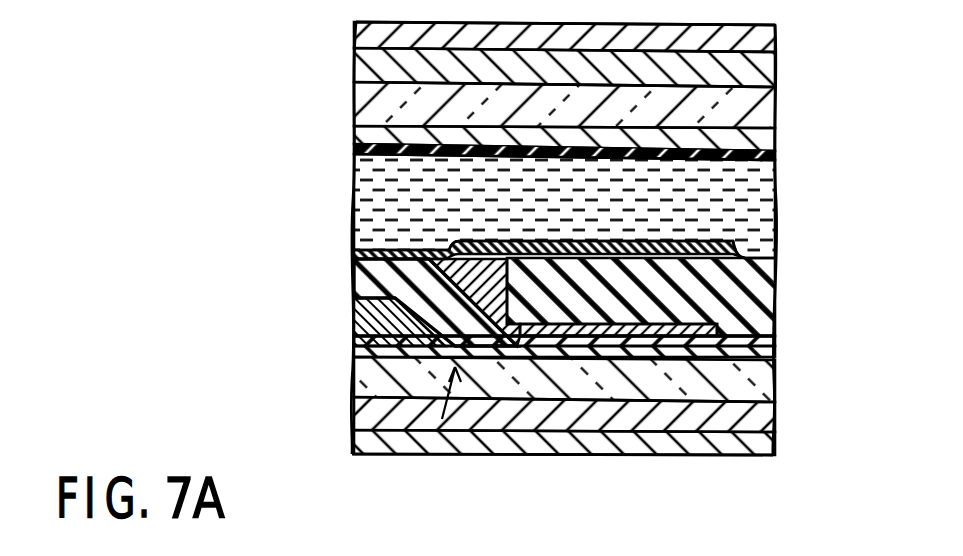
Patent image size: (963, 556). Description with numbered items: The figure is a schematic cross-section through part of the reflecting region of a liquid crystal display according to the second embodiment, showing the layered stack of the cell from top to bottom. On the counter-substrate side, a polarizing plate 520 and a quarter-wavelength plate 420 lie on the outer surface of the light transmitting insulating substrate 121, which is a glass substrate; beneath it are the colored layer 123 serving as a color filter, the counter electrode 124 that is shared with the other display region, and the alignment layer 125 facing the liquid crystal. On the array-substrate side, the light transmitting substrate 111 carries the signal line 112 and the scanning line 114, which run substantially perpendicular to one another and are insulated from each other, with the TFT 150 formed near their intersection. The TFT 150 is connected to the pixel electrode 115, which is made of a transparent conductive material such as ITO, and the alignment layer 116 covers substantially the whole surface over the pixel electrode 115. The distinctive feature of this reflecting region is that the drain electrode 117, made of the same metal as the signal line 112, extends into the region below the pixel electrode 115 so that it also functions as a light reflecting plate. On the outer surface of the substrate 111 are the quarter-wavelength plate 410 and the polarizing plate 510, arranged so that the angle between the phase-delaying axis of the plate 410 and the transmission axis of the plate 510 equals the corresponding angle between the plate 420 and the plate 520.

The light transmitting substrate 111 is at (773, 378).
The signal line 112 is at (395, 295).
The scanning line 114 is at (448, 352).
The pixel electrode 115 is at (700, 257).
The alignment layer 116 is at (357, 253).
The drain electrode 117 is at (514, 297).
The light transmitting insulating substrate 121 is at (774, 113).
The colored layer 123 is at (363, 277).
The counter electrode 124 is at (774, 145).
The alignment layer 125 is at (703, 160).
The TFT 150 is at (442, 419).
The 1/4-wavelength plate 410 is at (774, 424).
The 1/4-wavelength plate 420 is at (775, 68).
The polarizing plate 510 is at (774, 447).
The polarizing plate 520 is at (776, 41).